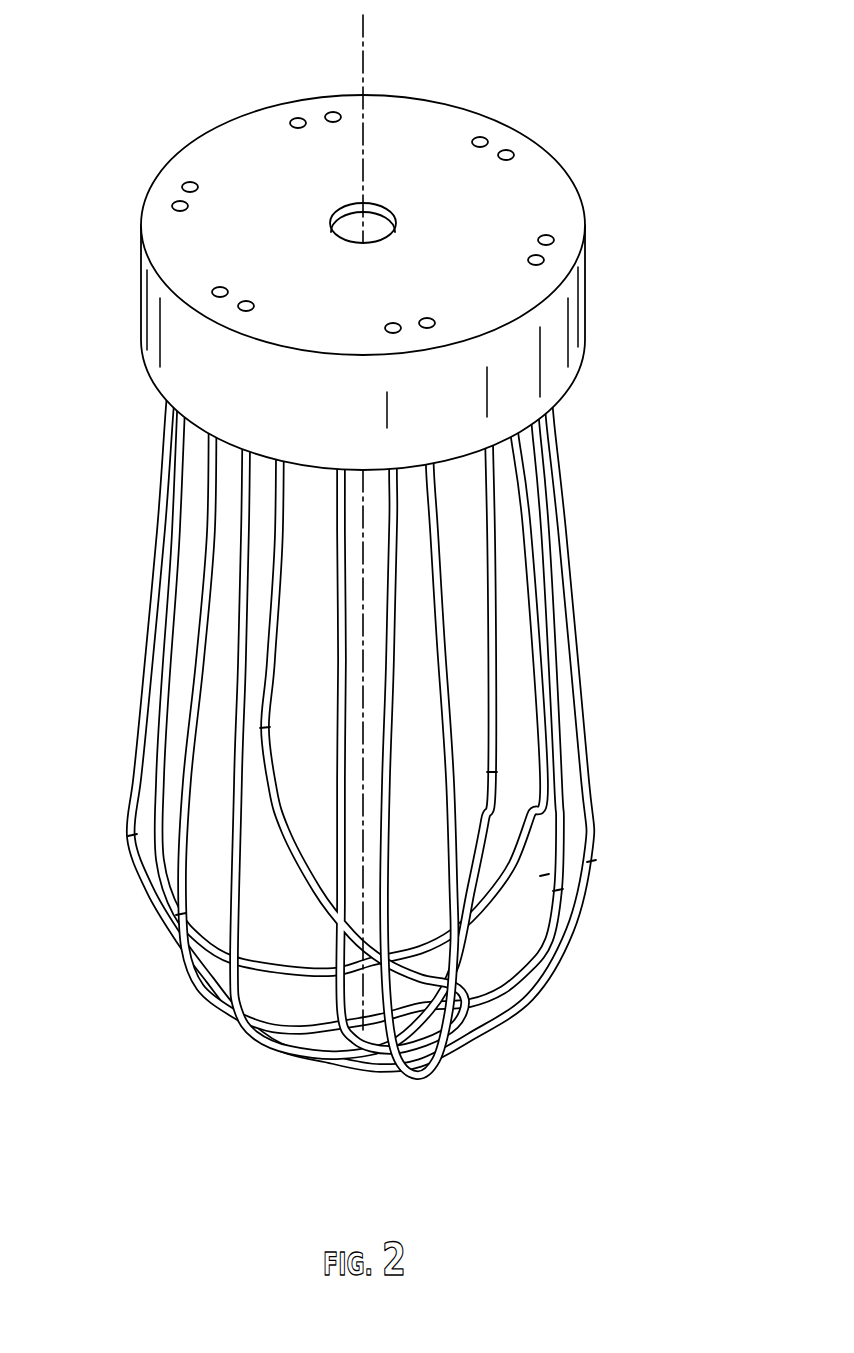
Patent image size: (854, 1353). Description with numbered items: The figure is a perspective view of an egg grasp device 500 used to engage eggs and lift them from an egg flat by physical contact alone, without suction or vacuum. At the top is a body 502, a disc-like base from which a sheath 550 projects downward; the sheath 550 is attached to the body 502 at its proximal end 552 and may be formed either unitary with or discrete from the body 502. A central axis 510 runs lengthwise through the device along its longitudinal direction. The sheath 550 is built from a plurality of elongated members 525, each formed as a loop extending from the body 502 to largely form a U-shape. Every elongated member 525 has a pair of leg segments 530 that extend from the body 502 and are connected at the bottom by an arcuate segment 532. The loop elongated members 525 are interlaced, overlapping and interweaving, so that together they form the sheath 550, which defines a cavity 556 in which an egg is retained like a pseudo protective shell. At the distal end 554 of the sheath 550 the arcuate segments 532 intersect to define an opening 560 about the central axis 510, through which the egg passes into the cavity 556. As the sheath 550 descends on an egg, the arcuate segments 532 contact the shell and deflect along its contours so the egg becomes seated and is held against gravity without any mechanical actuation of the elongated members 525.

The egg grasp device 500 is at (373, 561).
The body 502 is at (150, 326).
The central axis 510 is at (365, 67).
The elongated members 525 is at (235, 890).
The leg segments 530 is at (359, 722).
The arcuate segment 532 is at (185, 985).
The sheath 550 is at (616, 738).
The proximal end 552 is at (592, 408).
The distal end 554 is at (193, 1041).
The cavity 556 is at (305, 708).
The opening 560 is at (334, 1028).